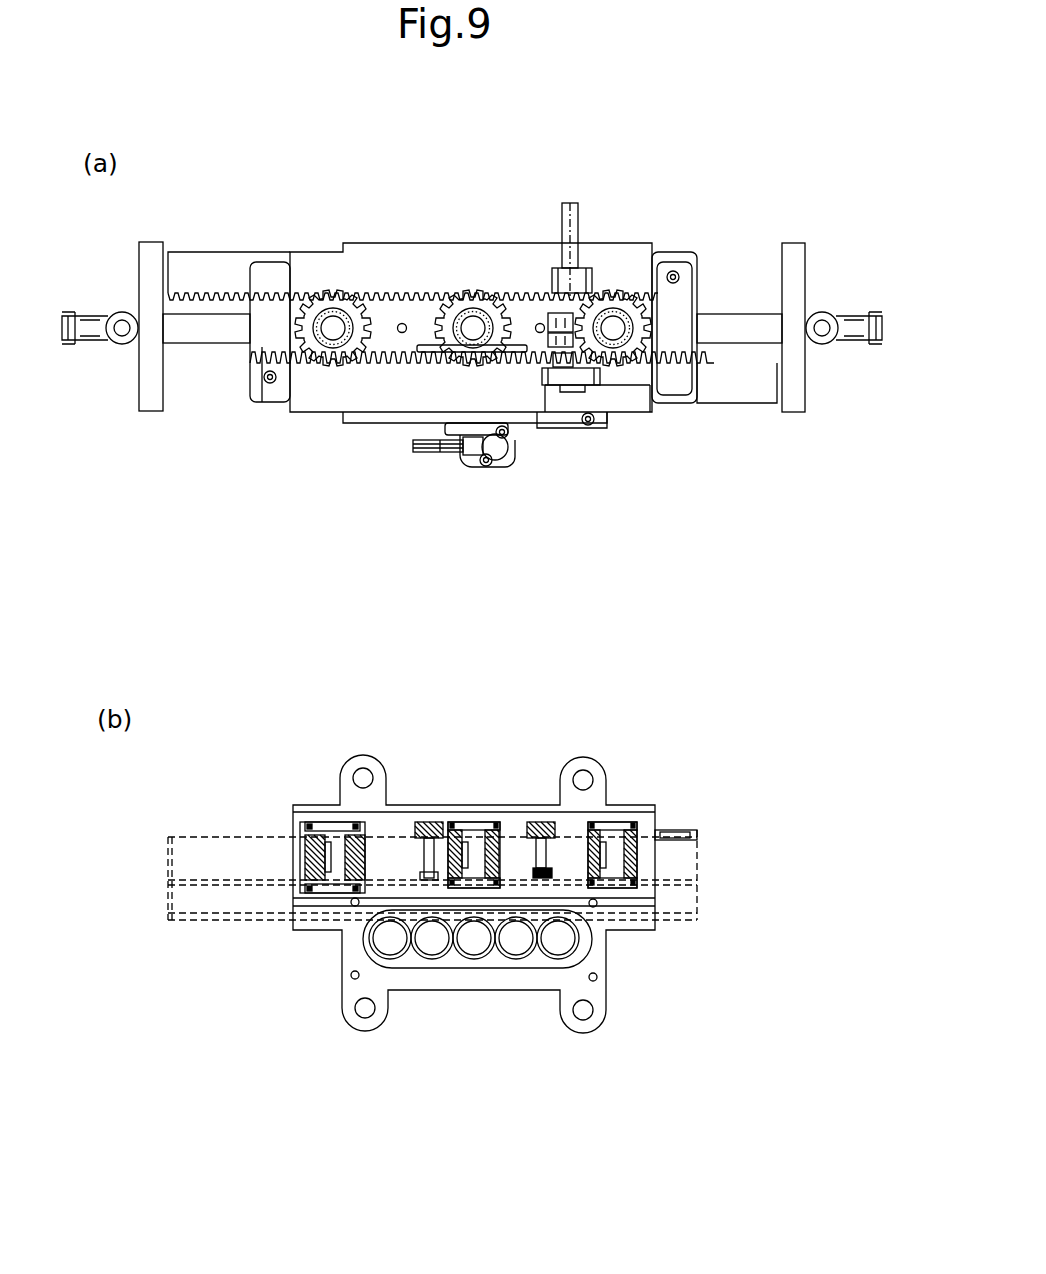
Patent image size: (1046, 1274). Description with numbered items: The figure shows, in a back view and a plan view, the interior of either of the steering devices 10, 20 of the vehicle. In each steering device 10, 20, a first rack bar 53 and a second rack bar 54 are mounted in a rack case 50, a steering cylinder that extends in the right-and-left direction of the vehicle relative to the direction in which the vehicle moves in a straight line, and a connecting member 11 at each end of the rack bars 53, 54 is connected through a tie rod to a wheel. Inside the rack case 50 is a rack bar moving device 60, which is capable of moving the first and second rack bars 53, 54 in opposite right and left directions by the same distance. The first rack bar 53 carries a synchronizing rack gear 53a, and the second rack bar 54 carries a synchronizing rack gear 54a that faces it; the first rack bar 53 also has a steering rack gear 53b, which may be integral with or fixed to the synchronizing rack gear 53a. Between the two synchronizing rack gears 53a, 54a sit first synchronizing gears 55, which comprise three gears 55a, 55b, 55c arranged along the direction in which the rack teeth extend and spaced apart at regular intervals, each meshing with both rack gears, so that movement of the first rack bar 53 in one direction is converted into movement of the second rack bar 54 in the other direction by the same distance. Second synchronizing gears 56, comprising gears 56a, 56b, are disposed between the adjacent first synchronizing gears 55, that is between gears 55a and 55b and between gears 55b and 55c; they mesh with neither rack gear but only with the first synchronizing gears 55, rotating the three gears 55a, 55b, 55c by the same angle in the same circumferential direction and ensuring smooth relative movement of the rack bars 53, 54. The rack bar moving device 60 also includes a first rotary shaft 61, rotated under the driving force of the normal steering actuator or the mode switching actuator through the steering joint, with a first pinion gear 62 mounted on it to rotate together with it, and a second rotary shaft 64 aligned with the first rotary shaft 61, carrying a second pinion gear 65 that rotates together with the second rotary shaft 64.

The steering device 10 is at (713, 236).
The steering device 20 is at (772, 432).
The connecting member 11 is at (121, 329).
The rack case 50 is at (312, 248).
The first rack bar 53 is at (207, 270).
The synchronizing rack gear 53a is at (215, 300).
The steering rack gear 53b is at (672, 910).
The second rack bar 54 is at (720, 378).
The synchronizing rack gear 54a is at (735, 352).
The first synchronizing gears 55 is at (470, 625).
The gear 55a is at (334, 327).
The gear 55b is at (473, 327).
The gear 55c is at (599, 627).
The second synchronizing gears 56 is at (474, 653).
The gear 56a is at (402, 333).
The gear 56b is at (540, 333).
The rack bar moving device 60 is at (600, 366).
The first rotary shaft 61 is at (578, 223).
The first pinion gear 62 is at (553, 277).
The second rotary shaft 64 is at (609, 386).
The second pinion gear 65 is at (598, 433).